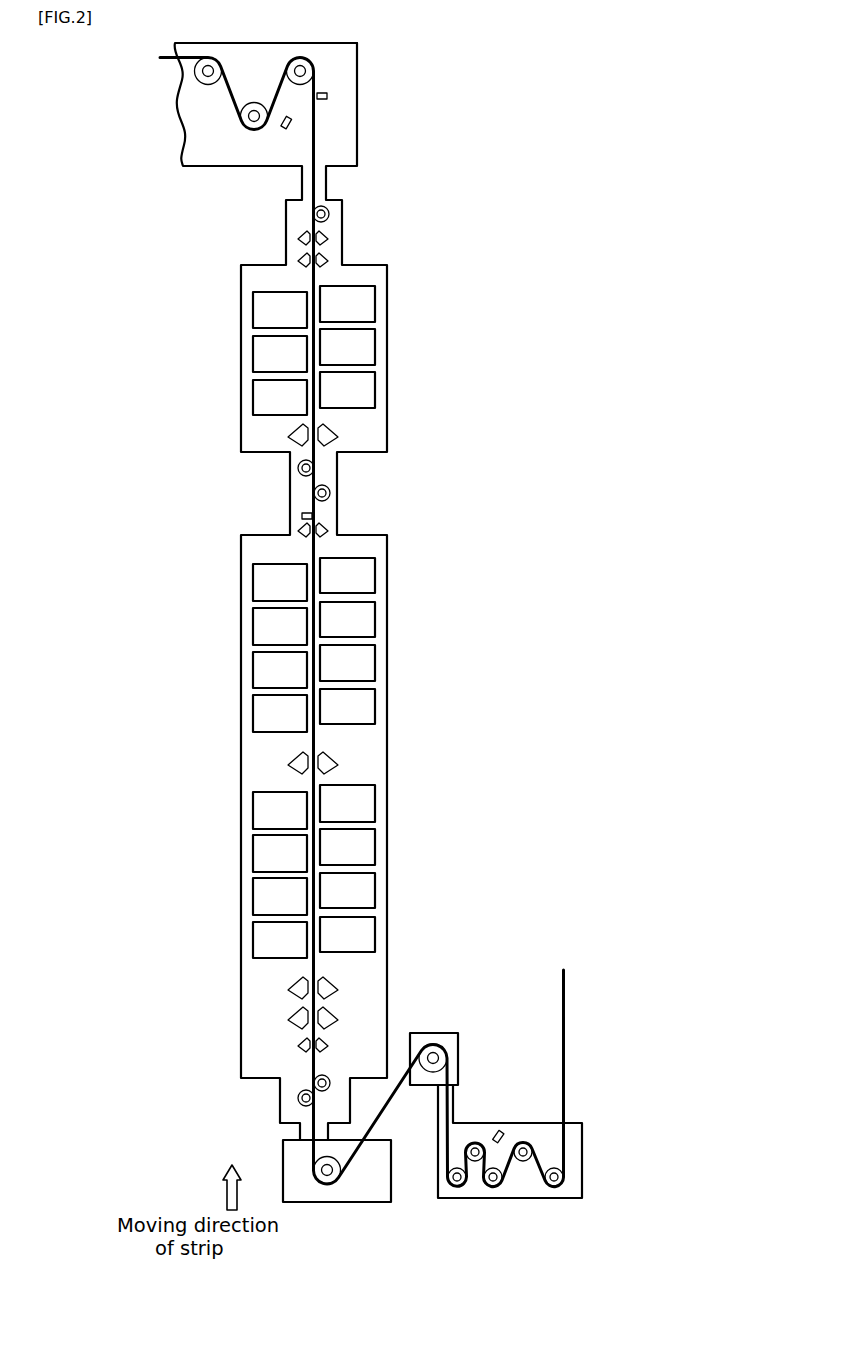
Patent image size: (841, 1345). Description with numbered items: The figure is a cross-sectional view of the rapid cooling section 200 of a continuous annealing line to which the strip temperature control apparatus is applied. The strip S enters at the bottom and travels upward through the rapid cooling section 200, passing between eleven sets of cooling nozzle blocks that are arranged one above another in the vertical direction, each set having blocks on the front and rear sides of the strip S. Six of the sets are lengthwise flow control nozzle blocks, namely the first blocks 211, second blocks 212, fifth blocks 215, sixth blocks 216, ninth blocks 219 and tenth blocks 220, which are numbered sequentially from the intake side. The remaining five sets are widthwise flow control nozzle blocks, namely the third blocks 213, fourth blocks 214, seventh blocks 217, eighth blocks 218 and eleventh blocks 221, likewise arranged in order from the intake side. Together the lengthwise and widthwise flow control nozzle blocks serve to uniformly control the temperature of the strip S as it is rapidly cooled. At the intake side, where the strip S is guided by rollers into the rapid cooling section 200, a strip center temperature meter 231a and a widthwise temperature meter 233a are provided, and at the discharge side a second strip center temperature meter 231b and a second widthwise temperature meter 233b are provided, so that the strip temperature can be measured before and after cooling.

The rapid cooling section 200 is at (212, 390).
The #1 blocks 211 is at (386, 935).
The #2 blocks 212 is at (386, 891).
The #3 blocks 213 is at (386, 847).
The #4 blocks 214 is at (386, 804).
The #5 blocks 215 is at (386, 706).
The #6 blocks 216 is at (386, 663).
The #7 blocks 217 is at (386, 620).
The #8 blocks 218 is at (386, 576).
The #9 blocks 219 is at (386, 390).
The #10 blocks 220 is at (386, 347).
The #11 blocks 221 is at (386, 304).
The strip center temperature meter 231a is at (503, 1115).
The strip center temperature meter 231b is at (262, 132).
The widthwise temperature meter 233a is at (567, 1181).
The widthwise temperature meter 233b is at (344, 96).
The strip S is at (318, 125).